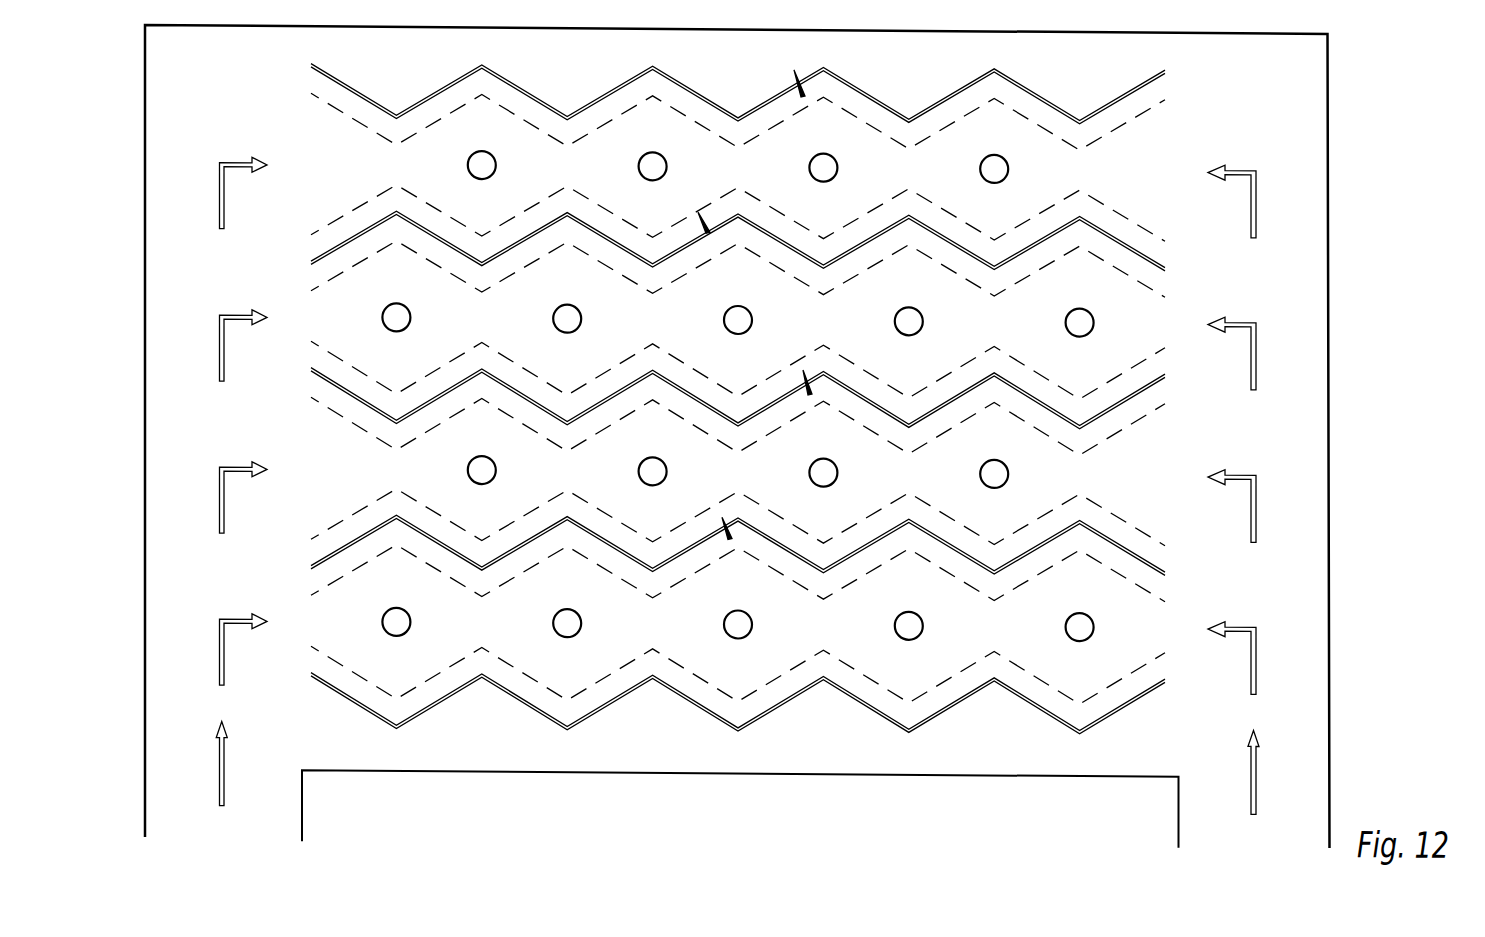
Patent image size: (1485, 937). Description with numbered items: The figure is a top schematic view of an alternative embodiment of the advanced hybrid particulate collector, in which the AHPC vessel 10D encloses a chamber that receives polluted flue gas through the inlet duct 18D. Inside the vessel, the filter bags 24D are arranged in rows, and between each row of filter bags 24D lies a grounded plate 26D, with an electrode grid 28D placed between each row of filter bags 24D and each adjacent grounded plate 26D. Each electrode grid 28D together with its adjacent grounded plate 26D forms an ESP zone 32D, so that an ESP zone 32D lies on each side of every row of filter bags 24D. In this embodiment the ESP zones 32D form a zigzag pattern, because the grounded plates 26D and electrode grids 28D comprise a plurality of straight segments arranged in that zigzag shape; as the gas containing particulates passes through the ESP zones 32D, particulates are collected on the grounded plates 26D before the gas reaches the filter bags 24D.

The AHPC vessel 10D is at (1370, 64).
The inlet duct 18D is at (302, 799).
The filter bags 24D is at (496, 162).
The grounded plates 26D is at (1027, 77).
The electrode grids 28D is at (1098, 132).
The ESP zones 32D is at (793, 77).